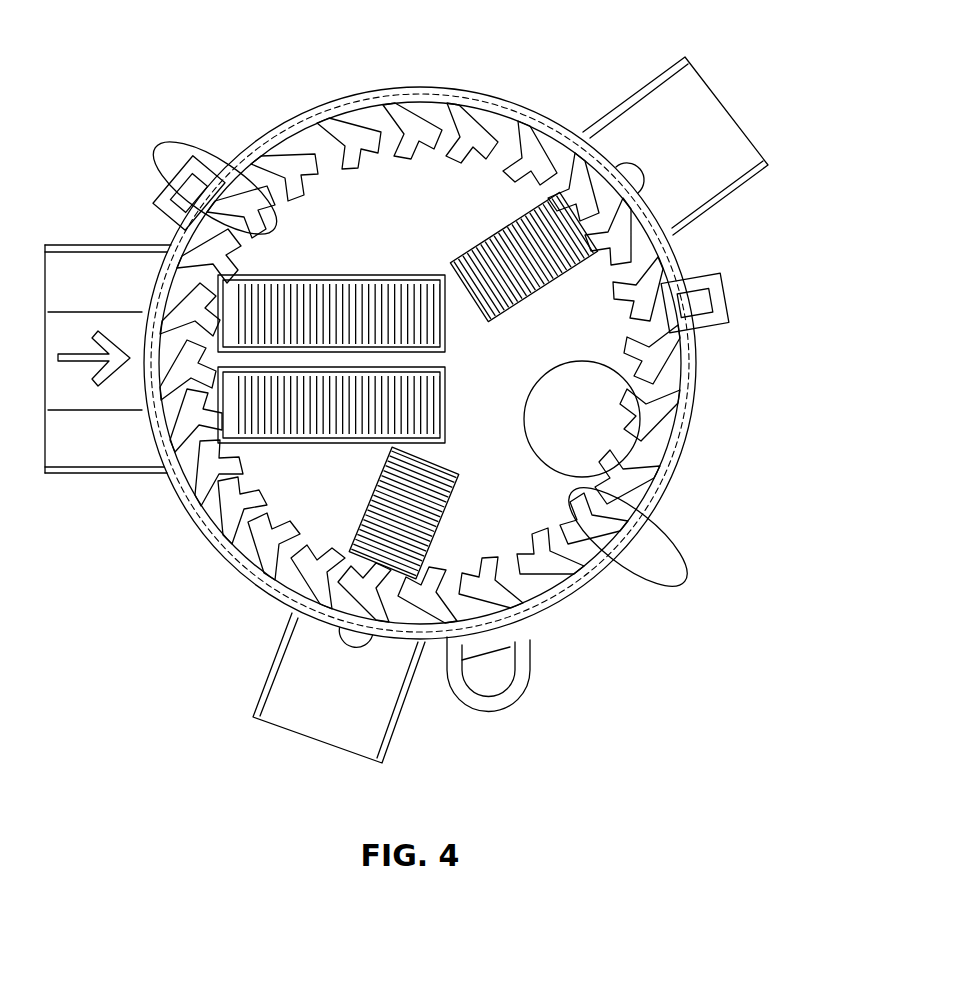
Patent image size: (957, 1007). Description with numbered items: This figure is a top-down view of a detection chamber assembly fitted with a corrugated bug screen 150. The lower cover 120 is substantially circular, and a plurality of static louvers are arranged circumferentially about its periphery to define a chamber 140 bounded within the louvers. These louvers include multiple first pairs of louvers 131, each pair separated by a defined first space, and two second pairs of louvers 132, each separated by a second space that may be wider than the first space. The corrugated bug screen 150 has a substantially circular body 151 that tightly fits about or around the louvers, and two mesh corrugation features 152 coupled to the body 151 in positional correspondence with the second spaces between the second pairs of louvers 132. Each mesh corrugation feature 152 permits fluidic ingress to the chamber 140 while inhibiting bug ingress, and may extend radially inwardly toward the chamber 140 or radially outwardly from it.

The lower cover 120 is at (553, 330).
The first pairs of louvers 131 is at (523, 153).
The second pair of louvers 132 is at (243, 177).
The chamber 140 is at (461, 421).
The corrugated bug screen 150 is at (218, 553).
The body 151 is at (190, 500).
The mesh corrugation feature 152 is at (255, 152).